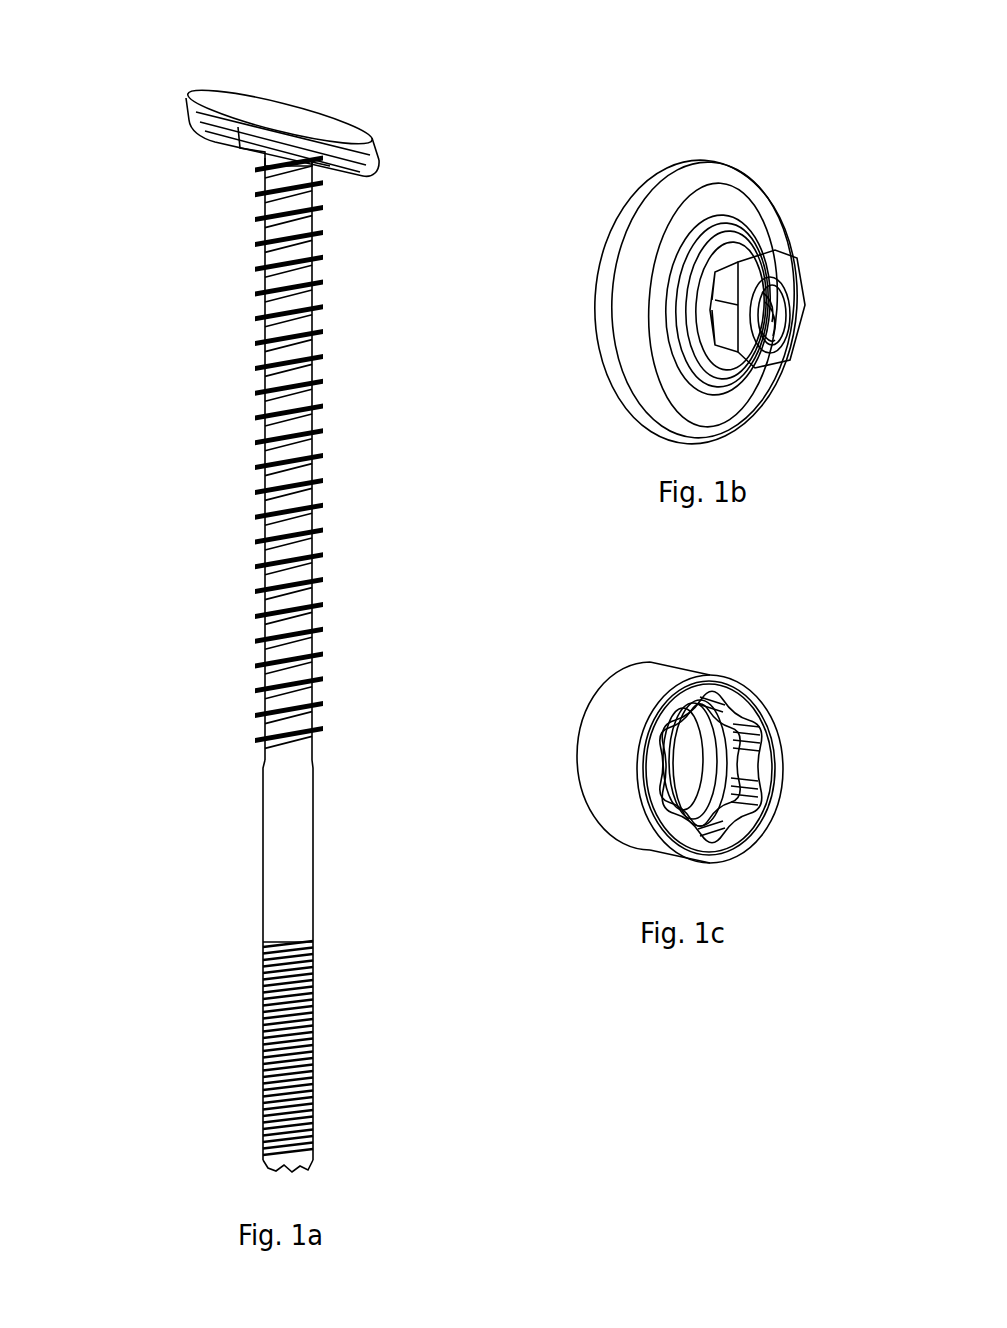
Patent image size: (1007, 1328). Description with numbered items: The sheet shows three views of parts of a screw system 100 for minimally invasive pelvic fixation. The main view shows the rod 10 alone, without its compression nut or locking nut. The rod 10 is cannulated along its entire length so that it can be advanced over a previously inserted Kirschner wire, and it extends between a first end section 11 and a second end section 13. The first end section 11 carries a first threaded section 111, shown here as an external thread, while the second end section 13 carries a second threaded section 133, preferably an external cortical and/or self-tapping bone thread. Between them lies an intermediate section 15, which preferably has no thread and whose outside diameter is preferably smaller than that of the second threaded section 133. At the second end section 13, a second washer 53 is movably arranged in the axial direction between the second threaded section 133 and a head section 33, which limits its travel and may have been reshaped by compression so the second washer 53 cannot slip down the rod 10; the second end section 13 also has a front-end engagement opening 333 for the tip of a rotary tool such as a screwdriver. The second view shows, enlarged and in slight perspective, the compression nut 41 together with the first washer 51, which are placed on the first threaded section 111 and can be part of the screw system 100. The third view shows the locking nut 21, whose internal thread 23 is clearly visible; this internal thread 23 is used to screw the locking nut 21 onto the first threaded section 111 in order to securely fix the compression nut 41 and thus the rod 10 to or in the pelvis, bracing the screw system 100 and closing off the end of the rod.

In FIG. 1A, the screw system 100 is at (125, 470).
In FIG. 1A, the rod 10 is at (265, 603).
In FIG. 1A, the second end section 13 is at (168, 72).
In FIG. 1A, the front-end engagement opening 333 is at (293, 90).
In FIG. 1A, the head section 33 is at (330, 93).
In FIG. 1A, the second washer 53 is at (353, 132).
In FIG. 1A, the second threaded section 133 is at (313, 375).
In FIG. 1A, the intermediate section 15 is at (332, 925).
In FIG. 1A, the first threaded section 111 is at (275, 1013).
In FIG. 1A, the first end section 11 is at (218, 1186).
In FIG. 1B, the first washer 51 is at (632, 296).
In FIG. 1B, the compression nut 41 is at (750, 356).
In FIG. 1C, the locking nut 21 is at (540, 722).
In FIG. 1C, the internal thread 23 is at (702, 760).